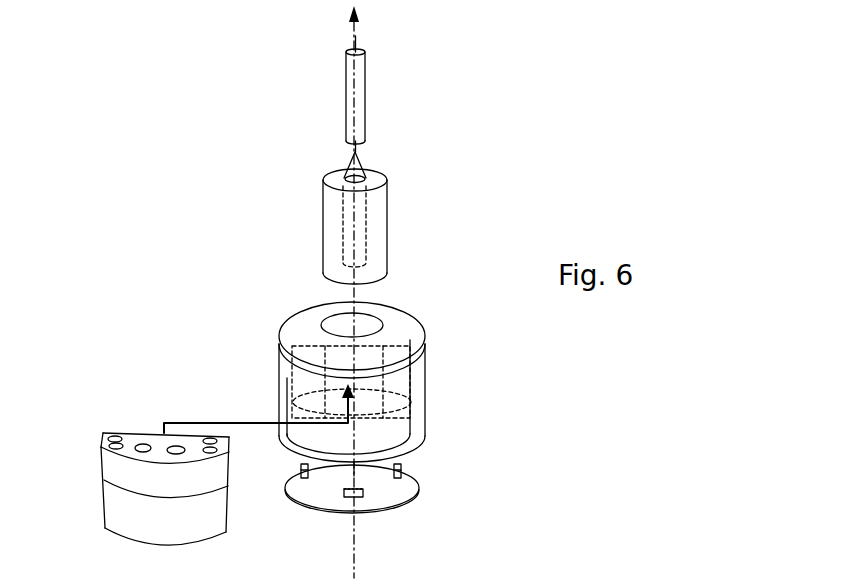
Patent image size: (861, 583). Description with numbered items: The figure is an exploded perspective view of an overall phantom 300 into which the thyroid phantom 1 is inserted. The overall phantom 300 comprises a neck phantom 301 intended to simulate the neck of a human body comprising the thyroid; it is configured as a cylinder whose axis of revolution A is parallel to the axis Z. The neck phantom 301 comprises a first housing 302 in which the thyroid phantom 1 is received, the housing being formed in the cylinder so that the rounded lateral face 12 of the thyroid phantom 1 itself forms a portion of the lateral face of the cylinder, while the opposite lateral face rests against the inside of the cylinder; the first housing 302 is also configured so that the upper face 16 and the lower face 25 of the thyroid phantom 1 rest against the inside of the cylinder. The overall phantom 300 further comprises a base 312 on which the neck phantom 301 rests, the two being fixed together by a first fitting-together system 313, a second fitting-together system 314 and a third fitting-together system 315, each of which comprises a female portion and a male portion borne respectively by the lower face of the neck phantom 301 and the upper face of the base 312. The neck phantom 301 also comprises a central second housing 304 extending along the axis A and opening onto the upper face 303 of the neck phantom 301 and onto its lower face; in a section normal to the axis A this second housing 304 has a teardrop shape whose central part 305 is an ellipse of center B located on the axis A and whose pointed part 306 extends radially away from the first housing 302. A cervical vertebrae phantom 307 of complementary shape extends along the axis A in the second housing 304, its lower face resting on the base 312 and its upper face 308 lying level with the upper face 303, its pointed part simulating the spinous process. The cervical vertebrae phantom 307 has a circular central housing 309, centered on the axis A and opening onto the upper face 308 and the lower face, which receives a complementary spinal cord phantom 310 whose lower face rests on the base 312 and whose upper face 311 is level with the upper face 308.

The thyroid phantom 1 is at (72, 525).
The rounded lateral face 12 is at (215, 516).
The upper face 16 is at (100, 458).
The lower face 25 is at (195, 546).
The overall phantom 300 is at (150, 229).
The neck phantom 301 is at (468, 388).
The first housing 302 is at (298, 418).
The upper face 303 is at (300, 310).
The second housing 304 is at (378, 314).
The central part 305 is at (386, 328).
The pointed part 306 is at (358, 317).
The cervical vertebrae phantom 307 is at (406, 218).
The upper face 308 is at (333, 176).
The central housing 309 is at (368, 176).
The spinal cord phantom 310 is at (386, 90).
The upper face 311 is at (346, 47).
The base 312 is at (416, 480).
The first fitting-together system 313 is at (300, 468).
The second fitting-together system 314 is at (364, 493).
The third fitting-together system 315 is at (402, 463).
The axis A is at (357, 36).
The center B is at (318, 320).